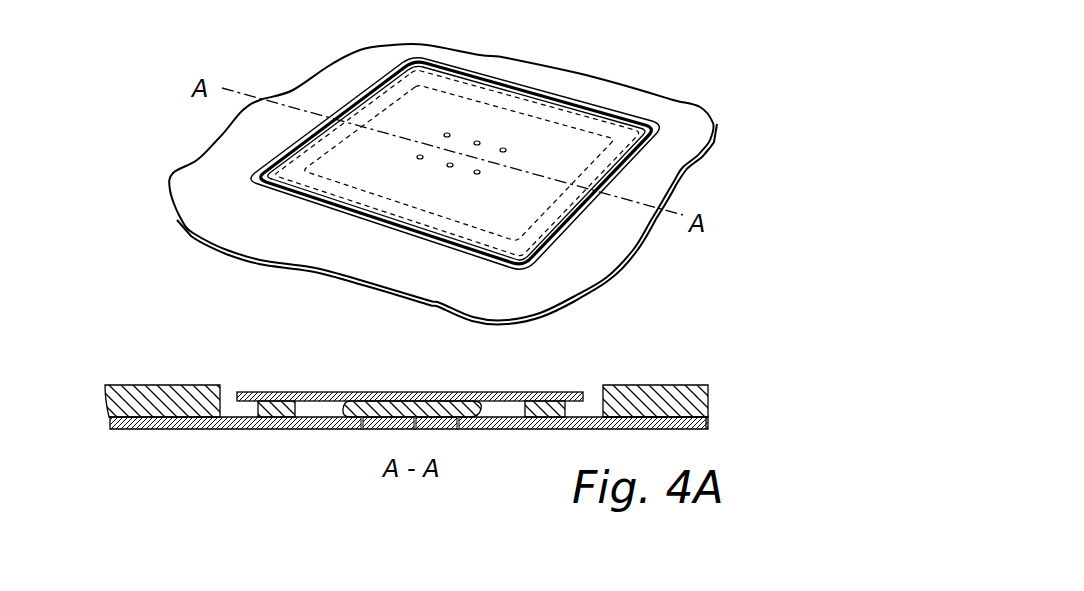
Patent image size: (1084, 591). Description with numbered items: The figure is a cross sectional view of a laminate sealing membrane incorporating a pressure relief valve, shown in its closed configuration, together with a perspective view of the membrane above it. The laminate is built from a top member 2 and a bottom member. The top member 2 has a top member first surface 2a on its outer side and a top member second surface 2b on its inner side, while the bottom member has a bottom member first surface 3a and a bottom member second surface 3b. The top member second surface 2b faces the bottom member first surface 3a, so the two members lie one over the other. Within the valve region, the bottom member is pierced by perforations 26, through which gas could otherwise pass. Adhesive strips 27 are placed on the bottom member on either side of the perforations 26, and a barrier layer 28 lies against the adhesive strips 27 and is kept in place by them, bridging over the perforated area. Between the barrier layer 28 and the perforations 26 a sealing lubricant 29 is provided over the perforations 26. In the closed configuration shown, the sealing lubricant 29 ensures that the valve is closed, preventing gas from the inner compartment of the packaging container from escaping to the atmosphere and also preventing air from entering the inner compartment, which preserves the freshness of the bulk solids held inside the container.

The top member 2 is at (685, 120).
The top member first surface 2a is at (680, 385).
The top member second surface 2b is at (700, 426).
The bottom member first surface 3a is at (647, 417).
The bottom member second surface 3b is at (657, 425).
The perforations 26 is at (362, 429).
The adhesive strips 27 is at (268, 410).
The barrier layer 28 is at (528, 128).
The sealing lubricant 29 is at (368, 412).